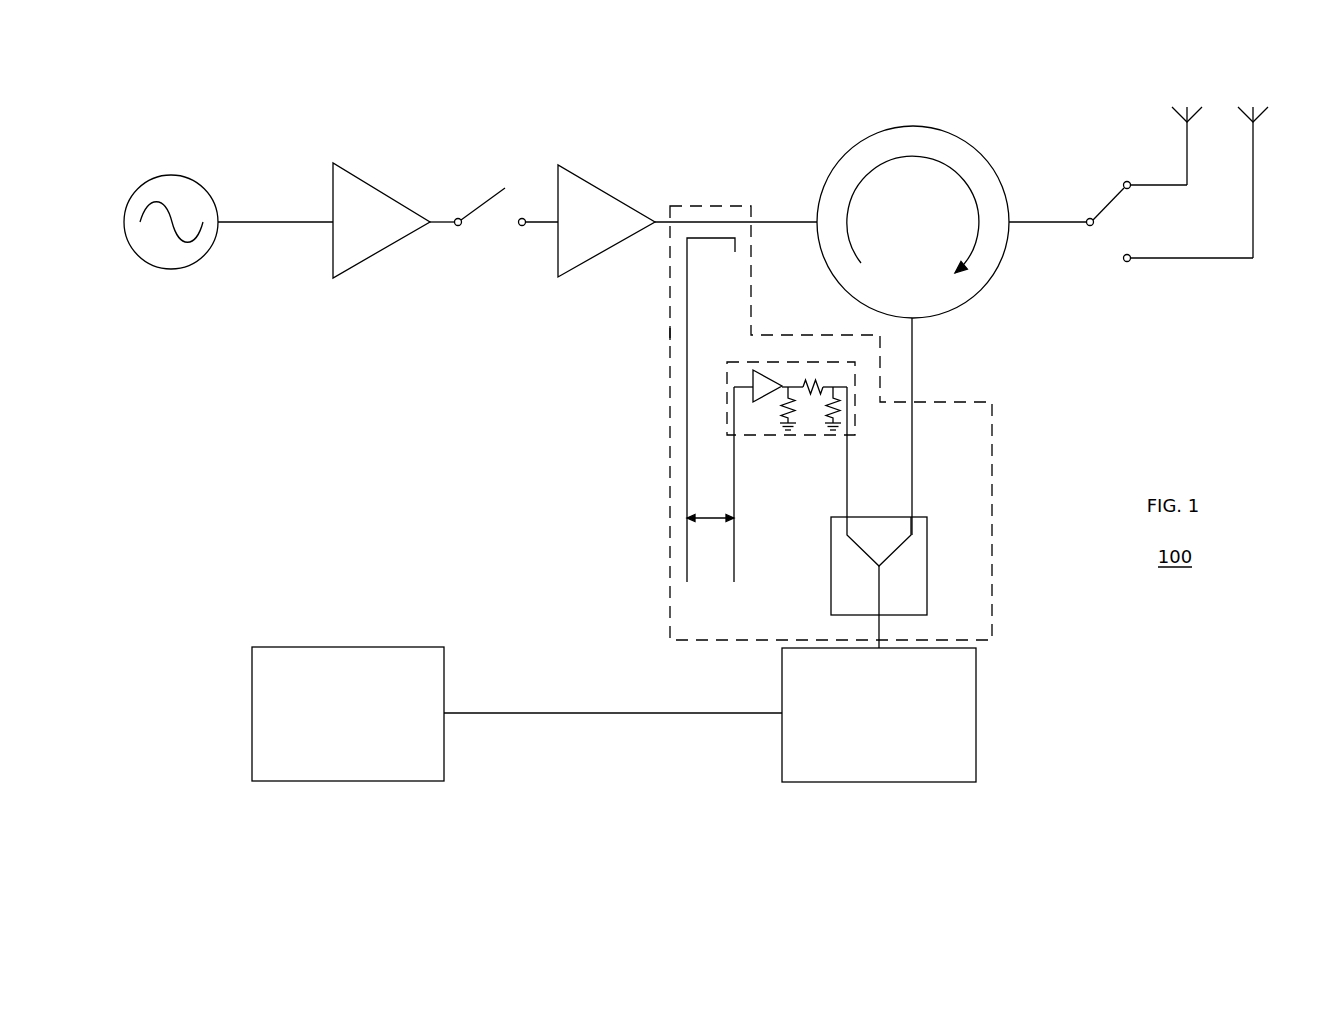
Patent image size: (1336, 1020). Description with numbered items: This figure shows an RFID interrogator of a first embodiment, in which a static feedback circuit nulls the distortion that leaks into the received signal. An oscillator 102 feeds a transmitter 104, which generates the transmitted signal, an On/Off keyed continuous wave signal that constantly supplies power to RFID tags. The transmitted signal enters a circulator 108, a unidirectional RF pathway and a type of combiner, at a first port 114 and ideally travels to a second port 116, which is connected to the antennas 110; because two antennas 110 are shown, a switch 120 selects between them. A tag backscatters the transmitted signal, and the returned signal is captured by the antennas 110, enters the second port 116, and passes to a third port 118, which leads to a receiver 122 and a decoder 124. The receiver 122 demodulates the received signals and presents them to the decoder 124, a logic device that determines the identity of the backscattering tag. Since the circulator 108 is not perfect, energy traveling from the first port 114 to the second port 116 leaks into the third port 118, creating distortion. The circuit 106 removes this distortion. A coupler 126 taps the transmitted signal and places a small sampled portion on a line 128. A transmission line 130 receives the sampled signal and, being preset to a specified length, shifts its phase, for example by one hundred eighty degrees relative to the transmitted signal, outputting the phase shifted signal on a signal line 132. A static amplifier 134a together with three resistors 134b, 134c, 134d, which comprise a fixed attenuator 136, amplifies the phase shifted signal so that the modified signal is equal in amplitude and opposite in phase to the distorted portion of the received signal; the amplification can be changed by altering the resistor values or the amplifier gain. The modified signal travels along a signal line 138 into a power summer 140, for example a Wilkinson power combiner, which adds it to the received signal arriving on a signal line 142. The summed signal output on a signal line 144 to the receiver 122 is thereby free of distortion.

The oscillator 102 is at (170, 173).
The transmitter 104 is at (540, 108).
The circuit 106 is at (667, 470).
The circulator 108 is at (910, 125).
The antennas 110 is at (1253, 100).
The port 1 114 is at (780, 197).
The port 2 116 is at (1032, 200).
The port 3 118 is at (973, 368).
The switch 120 is at (1107, 237).
The receiver 122 is at (976, 682).
The decoder 124 is at (444, 660).
The coupler 126 is at (707, 250).
The line 128 is at (671, 338).
The transmission line 130 is at (693, 512).
The signal line 132 is at (737, 490).
The static amplifier 134a is at (767, 400).
The resistor 134b is at (810, 376).
The resistor 134c is at (832, 417).
The resistor 134d is at (785, 418).
The fixed attenuator 136 is at (727, 415).
The signal line 138 is at (848, 502).
The power summer 140 is at (928, 592).
The signal line 142 is at (912, 468).
The signal line 144 is at (880, 627).